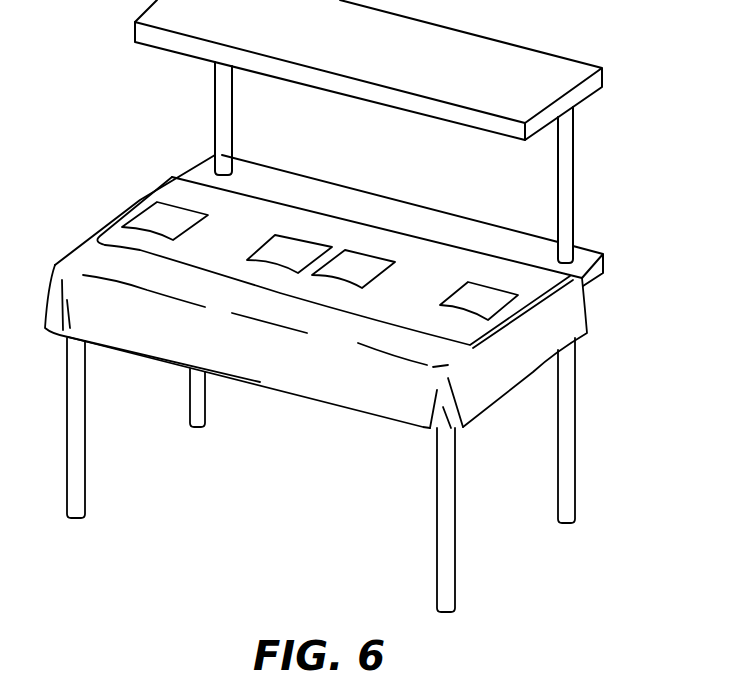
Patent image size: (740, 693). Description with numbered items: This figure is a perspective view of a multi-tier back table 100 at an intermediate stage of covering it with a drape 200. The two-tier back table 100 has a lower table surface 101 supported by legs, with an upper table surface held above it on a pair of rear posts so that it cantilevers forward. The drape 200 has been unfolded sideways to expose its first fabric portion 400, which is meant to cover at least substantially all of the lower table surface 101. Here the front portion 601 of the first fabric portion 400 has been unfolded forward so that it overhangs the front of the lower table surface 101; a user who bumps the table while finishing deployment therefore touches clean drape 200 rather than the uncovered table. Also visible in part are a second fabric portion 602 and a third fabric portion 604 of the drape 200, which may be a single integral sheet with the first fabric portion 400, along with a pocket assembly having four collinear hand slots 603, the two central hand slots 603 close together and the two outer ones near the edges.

The two-tier back table 100 is at (322, 306).
The lower table surface 101 is at (377, 207).
The drape 200 is at (133, 345).
The first fabric portion 400 is at (252, 375).
The front portion 601 is at (367, 400).
The second fabric portion 602 is at (443, 257).
The hand slot 603 is at (290, 242).
The third fabric portion 604 is at (108, 232).